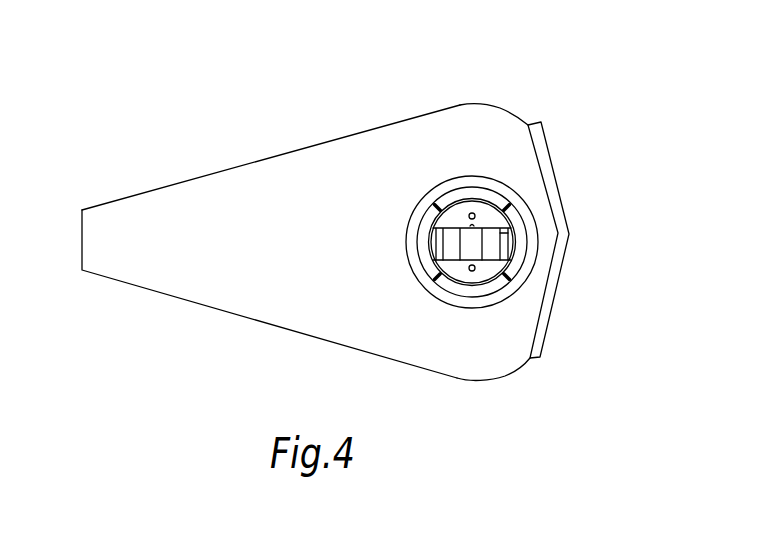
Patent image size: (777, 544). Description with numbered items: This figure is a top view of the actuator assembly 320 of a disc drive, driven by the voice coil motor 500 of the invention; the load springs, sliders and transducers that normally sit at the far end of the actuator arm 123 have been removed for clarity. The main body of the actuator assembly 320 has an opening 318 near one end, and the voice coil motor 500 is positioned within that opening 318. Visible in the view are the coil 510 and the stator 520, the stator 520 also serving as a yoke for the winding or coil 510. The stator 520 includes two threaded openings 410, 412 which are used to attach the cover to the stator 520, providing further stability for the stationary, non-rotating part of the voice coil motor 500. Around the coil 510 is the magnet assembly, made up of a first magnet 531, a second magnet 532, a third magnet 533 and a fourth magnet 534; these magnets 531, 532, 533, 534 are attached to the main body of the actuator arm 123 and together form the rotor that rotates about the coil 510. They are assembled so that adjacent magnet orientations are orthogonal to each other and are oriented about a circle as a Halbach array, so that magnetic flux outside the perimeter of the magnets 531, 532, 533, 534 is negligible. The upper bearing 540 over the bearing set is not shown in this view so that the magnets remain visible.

The actuator arm 123 is at (183, 280).
The actuator assembly 320 is at (408, 365).
The opening 318 is at (428, 205).
The threaded opening 410 is at (467, 217).
The threaded opening 412 is at (467, 268).
The voice coil motor 500 is at (528, 225).
The coil 510 is at (487, 232).
The stator 520 is at (453, 273).
The first magnet 531 is at (466, 193).
The second magnet 532 is at (517, 257).
The third magnet 533 is at (492, 290).
The fourth magnet 534 is at (418, 239).
The upper bearing 540 is at (473, 305).